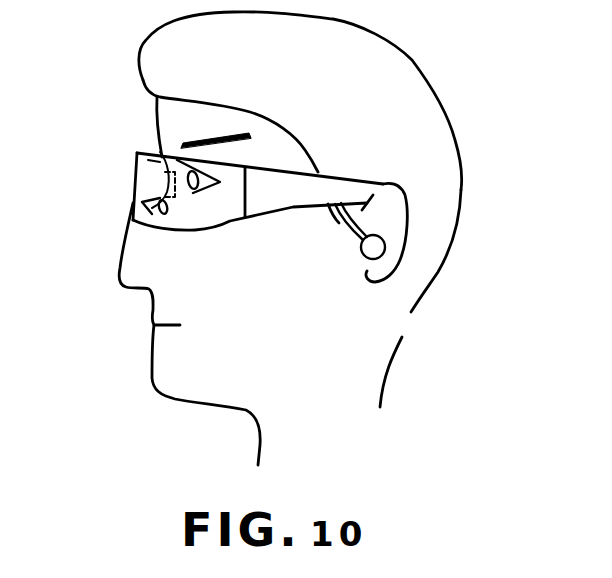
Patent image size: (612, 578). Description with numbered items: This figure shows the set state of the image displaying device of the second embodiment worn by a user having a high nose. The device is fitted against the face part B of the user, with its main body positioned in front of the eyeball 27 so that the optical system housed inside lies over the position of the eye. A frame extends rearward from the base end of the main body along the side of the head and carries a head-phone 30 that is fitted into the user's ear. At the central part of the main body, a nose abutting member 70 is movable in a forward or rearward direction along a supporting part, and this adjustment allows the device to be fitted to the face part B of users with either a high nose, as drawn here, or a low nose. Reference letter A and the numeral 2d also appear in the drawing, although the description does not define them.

The user's head A is at (415, 65).
The face part B is at (155, 122).
The display device 2d is at (193, 193).
The nose abutting member 70 is at (146, 204).
The eyeball 27 is at (153, 147).
The head-phone 30 is at (373, 248).